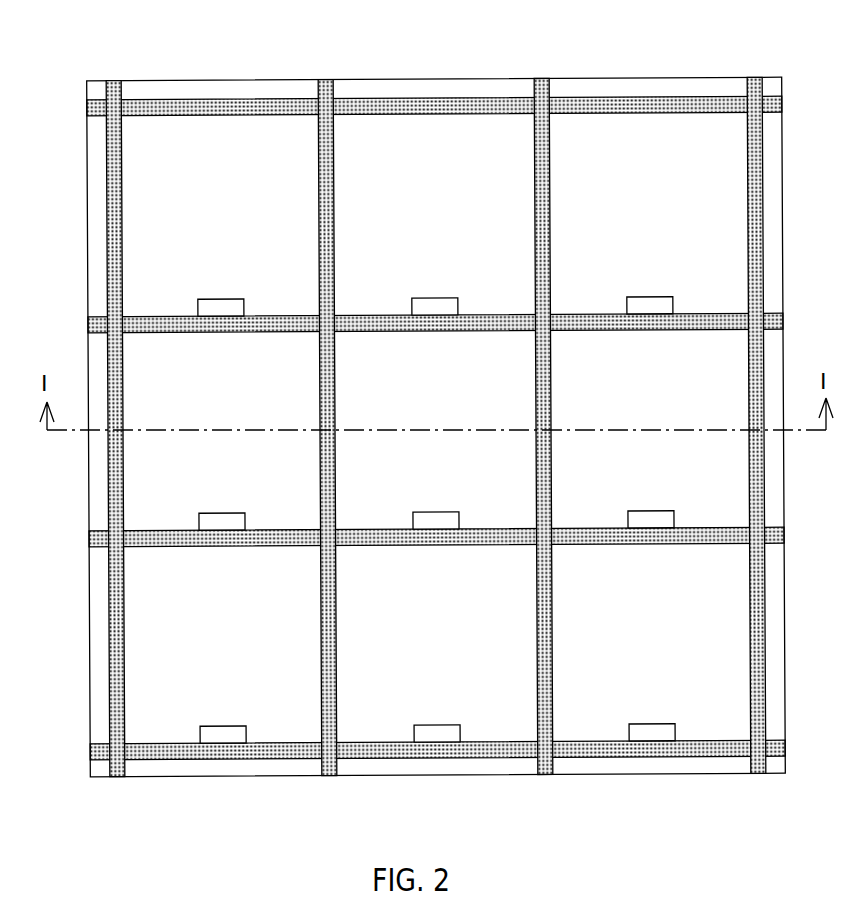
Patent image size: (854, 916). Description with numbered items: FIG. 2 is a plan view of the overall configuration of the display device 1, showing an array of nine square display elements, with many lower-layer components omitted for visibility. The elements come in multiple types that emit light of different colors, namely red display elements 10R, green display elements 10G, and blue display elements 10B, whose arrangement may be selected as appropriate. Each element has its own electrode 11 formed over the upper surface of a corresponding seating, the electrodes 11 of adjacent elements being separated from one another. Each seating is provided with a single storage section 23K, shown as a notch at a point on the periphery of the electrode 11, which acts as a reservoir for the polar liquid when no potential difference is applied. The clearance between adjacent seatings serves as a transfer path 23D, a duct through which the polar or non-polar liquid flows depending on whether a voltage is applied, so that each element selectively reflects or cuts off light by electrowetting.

The display device 1 is at (707, 48).
The blue display element 10B is at (222, 112).
The green display element 10G is at (436, 112).
The red display element 10R is at (650, 112).
The electrode 11 is at (487, 705).
The transfer path 23D is at (110, 217).
The storage section 23K is at (650, 733).